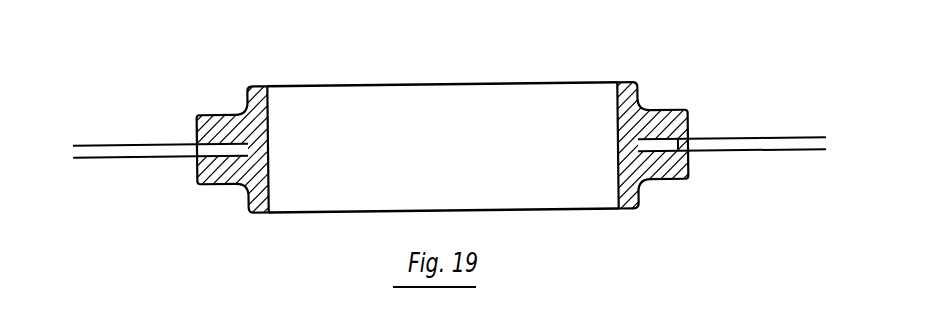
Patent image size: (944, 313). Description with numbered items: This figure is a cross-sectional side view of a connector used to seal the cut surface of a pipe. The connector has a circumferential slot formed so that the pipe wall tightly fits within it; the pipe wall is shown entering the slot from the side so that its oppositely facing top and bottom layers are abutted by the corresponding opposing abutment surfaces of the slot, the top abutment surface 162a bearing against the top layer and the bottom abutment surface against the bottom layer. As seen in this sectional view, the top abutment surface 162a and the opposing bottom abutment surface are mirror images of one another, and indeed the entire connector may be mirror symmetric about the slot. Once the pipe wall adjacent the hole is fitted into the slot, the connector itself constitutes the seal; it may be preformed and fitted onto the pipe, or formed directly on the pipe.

The top abutment surface 162a is at (673, 178).